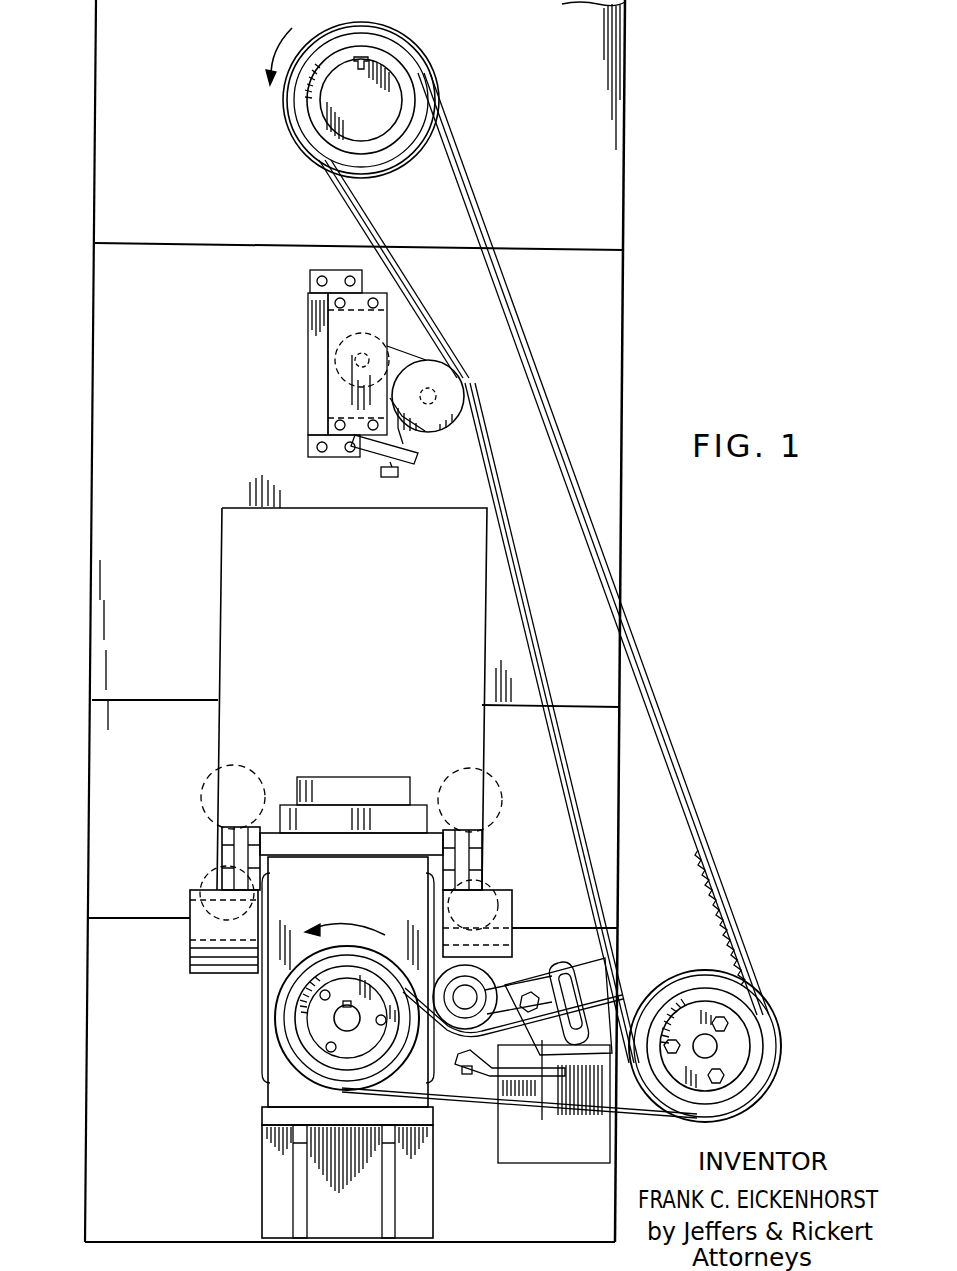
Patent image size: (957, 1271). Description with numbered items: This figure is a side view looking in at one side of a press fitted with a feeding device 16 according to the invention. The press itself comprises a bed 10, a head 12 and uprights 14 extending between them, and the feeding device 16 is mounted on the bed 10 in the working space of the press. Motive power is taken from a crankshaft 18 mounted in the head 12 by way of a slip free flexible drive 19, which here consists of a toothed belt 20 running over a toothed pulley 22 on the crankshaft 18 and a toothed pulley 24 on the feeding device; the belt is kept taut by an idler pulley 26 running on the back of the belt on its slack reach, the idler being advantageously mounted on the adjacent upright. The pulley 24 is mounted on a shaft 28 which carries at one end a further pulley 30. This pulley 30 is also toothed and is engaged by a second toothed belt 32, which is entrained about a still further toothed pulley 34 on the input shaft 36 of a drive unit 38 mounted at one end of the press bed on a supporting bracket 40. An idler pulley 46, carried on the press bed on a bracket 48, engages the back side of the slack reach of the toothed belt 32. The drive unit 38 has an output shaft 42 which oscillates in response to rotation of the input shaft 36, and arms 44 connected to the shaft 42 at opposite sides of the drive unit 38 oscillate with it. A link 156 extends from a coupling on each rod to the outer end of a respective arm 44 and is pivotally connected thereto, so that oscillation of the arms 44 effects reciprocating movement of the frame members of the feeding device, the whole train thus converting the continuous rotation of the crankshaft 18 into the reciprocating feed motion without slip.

The bed 10 is at (92, 1027).
The head 12 is at (606, 212).
The uprights 14 is at (118, 561).
The feeding device 16 is at (305, 791).
The crankshaft 18 is at (395, 102).
The slip free flexible drive 19 is at (544, 568).
The toothed belt 20 is at (688, 814).
The toothed pulley 22 is at (366, 100).
The toothed pulley 24 is at (743, 1046).
The idler pulley 26 is at (455, 434).
The shaft 28 is at (707, 1048).
The further pulley 30 is at (760, 1094).
The toothed belt 32 is at (647, 1115).
The toothed pulley 34 is at (275, 998).
The input shaft 36 is at (340, 1020).
The drive unit 38 is at (258, 1059).
The supporting bracket 40 is at (268, 1185).
The output shaft 42 is at (205, 940).
The arms 44 is at (222, 890).
The idler pulley 46 is at (488, 970).
The bracket 48 is at (541, 1100).
The link 156 is at (226, 840).